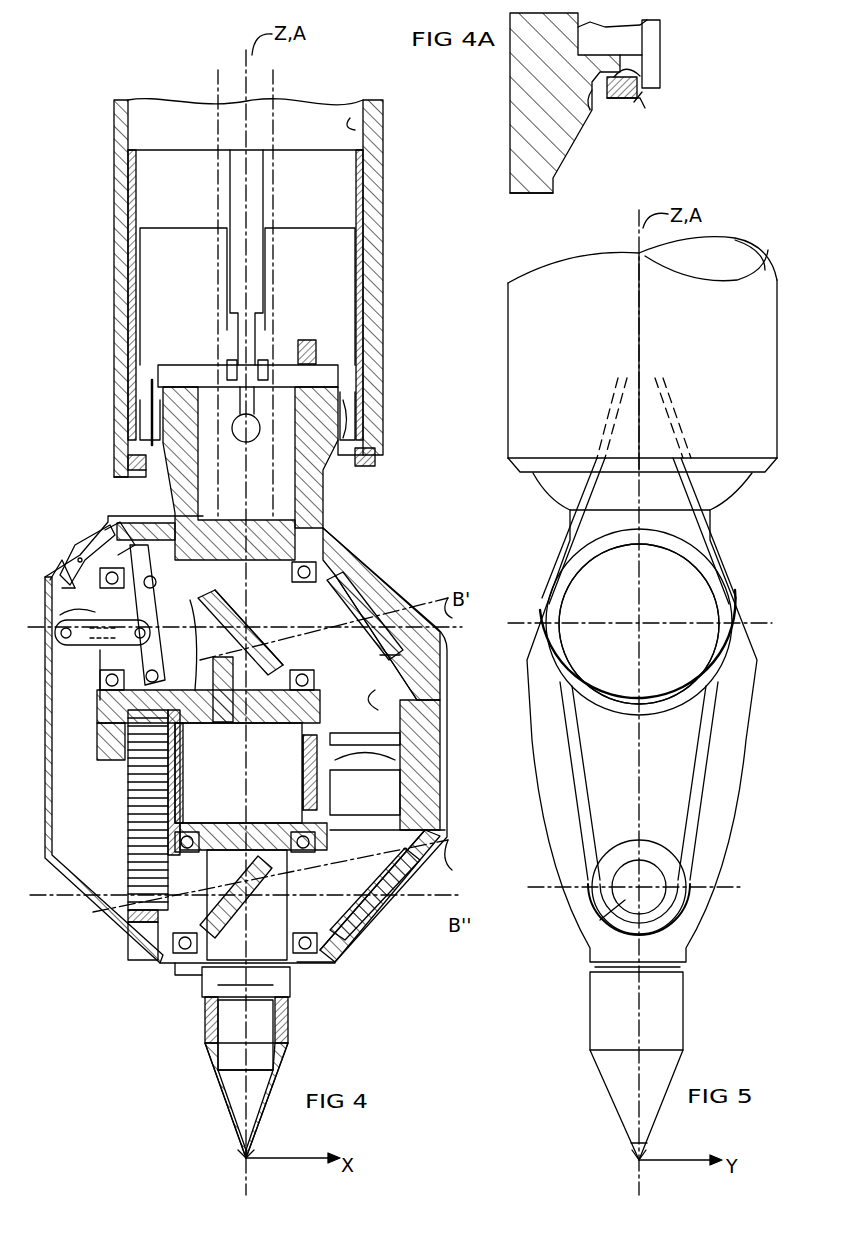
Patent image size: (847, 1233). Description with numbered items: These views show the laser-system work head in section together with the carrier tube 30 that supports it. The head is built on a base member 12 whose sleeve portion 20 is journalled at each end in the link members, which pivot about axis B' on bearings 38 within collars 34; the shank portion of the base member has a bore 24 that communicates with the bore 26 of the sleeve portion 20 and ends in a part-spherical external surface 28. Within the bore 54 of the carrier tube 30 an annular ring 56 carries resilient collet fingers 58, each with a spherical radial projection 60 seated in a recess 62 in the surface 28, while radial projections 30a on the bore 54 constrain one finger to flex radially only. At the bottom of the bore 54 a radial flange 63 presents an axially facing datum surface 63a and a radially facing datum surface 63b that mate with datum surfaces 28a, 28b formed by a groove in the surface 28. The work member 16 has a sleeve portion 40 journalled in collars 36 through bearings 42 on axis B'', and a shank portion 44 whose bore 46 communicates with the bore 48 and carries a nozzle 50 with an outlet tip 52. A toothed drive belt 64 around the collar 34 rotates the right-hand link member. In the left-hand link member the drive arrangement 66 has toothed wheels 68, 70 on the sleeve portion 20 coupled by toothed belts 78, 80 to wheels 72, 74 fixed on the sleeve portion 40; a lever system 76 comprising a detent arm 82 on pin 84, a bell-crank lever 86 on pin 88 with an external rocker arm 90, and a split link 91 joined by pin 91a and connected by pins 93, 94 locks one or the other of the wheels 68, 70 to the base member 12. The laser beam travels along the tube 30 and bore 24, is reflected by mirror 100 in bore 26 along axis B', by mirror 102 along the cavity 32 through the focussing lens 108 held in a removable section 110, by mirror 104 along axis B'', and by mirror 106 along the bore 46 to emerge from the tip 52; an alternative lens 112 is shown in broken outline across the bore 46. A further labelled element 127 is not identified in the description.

In FIG. 4, the base member 12 is at (330, 516).
In FIG. 4A, the base member 12 is at (560, 192).
In FIG. 5, the base member 12 is at (566, 522).
In FIG. 4, the work member 16 is at (198, 1070).
In FIG. 5, the work member 16 is at (582, 1072).
In FIG. 4, the sleeve portion 20 is at (272, 745).
In FIG. 4, the bore 24 is at (198, 395).
In FIG. 4, the bore 26 is at (183, 740).
In FIG. 4, the part-spherical external surface 28 is at (330, 490).
In FIG. 4A, the part-spherical external surface 28 is at (570, 170).
In FIG. 5, the part-spherical external surface 28 is at (562, 488).
In FIG. 4A, the radial datum surface 28a is at (648, 100).
In FIG. 4A, the axially extending datum surface 28b is at (645, 112).
In FIG. 4, the carrier tube 30 is at (380, 252).
In FIG. 4A, the carrier tube 30 is at (660, 30).
In FIG. 5, the carrier tube 30 is at (604, 356).
In FIG. 4, the radial projections 30a is at (263, 368).
In FIG. 4, the internal cavity 32 is at (380, 700).
In FIG. 4, the collar 34 is at (350, 572).
In FIG. 4, the collar 36 is at (290, 975).
In FIG. 4, the bearings 38 is at (380, 585).
In FIG. 4, the sleeve portion 40 is at (238, 840).
In FIG. 4, the bearing 42 is at (200, 970).
In FIG. 4, the shank portion 44 is at (290, 1020).
In FIG. 4, the bore 46 is at (215, 990).
In FIG. 4, the bore 48 is at (400, 875).
In FIG. 4, the nozzle 50 is at (212, 1105).
In FIG. 5, the nozzle 50 is at (618, 1105).
In FIG. 4, the outlet tip 52 is at (244, 1158).
In FIG. 5, the outlet tip 52 is at (637, 1160).
In FIG. 4, the bore 54 is at (355, 130).
In FIG. 4, the annular ring 56 is at (127, 194).
In FIG. 4, the collet fingers 58 is at (136, 340).
In FIG. 4, the radial projection 60 is at (130, 442).
In FIG. 4, the recesses 62 is at (352, 438).
In FIG. 4, the radial flange 63 is at (382, 456).
In FIG. 4A, the radial flange 63 is at (650, 95).
In FIG. 4A, the axially facing datum surface 63a is at (642, 65).
In FIG. 4A, the radially facing datum surface 63b is at (600, 112).
In FIG. 4, the toothed drive belt 64 is at (307, 345).
In FIG. 5, the toothed drive belt 64 is at (662, 412).
In FIG. 4, the drive arrangement 66 is at (85, 778).
In FIG. 4, the toothed wheel 68 is at (172, 513).
In FIG. 5, the toothed wheel 68 is at (590, 590).
In FIG. 4, the toothed wheel 70 is at (130, 592).
In FIG. 5, the toothed wheel 70 is at (639, 624).
In FIG. 4, the toothed wheel 72 is at (143, 900).
In FIG. 5, the toothed wheel 72 is at (649, 852).
In FIG. 4, the toothed wheel 74 is at (140, 930).
In FIG. 5, the toothed wheel 74 is at (627, 898).
In FIG. 4, the lever system 76 is at (75, 700).
In FIG. 4, the toothed belt 78 is at (181, 785).
In FIG. 5, the toothed belt 78 is at (697, 810).
In FIG. 4, the toothed belt 80 is at (150, 805).
In FIG. 5, the toothed belt 80 is at (678, 837).
In FIG. 4, the detent arm 82 is at (205, 600).
In FIG. 4, the pin 84 is at (110, 712).
In FIG. 4, the bell-crank lever 86 is at (58, 578).
In FIG. 4, the pin 88 is at (80, 556).
In FIG. 4, the rocker arm 90 is at (70, 560).
In FIG. 4, the link 91 is at (75, 655).
In FIG. 4, the pin 91a is at (70, 592).
In FIG. 4, the pin 93 is at (240, 620).
In FIG. 4, the pin 94 is at (70, 645).
In FIG. 4, the mirror 100 is at (250, 645).
In FIG. 4, the mirror 102 is at (380, 668).
In FIG. 4, the mirror 104 is at (420, 835).
In FIG. 4, the mirror 106 is at (345, 925).
In FIG. 4, the focussing lens 108 is at (370, 755).
In FIG. 4, the removable section 110 is at (420, 790).
In FIG. 4, the alternative lens 112 is at (210, 1028).
In FIG. 4, the spring 127 is at (356, 402).